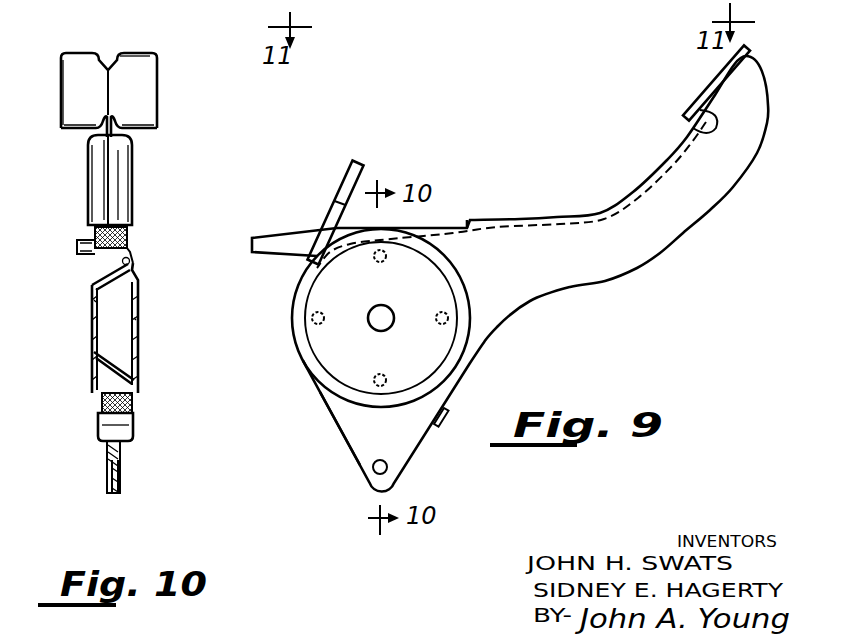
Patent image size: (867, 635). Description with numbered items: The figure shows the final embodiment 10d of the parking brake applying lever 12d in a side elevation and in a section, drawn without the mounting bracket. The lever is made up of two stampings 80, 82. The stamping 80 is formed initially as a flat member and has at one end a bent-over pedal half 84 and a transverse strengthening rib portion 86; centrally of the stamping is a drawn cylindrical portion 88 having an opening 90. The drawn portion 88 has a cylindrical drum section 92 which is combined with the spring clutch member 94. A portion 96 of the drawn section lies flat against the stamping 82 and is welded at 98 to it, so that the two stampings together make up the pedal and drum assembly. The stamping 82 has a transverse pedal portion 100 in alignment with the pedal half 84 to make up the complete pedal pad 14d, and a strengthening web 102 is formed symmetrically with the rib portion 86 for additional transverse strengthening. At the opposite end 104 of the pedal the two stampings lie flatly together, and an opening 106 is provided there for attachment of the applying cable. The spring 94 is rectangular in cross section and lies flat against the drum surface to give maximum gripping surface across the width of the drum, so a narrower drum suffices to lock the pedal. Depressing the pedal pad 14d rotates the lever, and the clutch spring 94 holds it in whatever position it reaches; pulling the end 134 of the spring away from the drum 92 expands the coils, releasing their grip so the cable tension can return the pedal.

In FIG. 9, the embodiment 10d is at (571, 213).
In FIG. 10, the applying lever 12d is at (114, 200).
In FIG. 9, the applying lever 12d is at (710, 203).
In FIG. 10, the pedal pad 14d is at (135, 54).
In FIG. 9, the pedal pad 14d is at (712, 87).
In FIG. 10, the stamping 80 is at (88, 344).
In FIG. 10, the stamping 82 is at (139, 300).
In FIG. 9, the stamping 82 is at (653, 258).
In FIG. 10, the pedal half 84 is at (75, 65).
In FIG. 10, the strengthening rib portion 86 is at (95, 160).
In FIG. 10, the drawn cylindrical portion 88 is at (90, 295).
In FIG. 10, the opening 90 is at (93, 318).
In FIG. 9, the opening 90 is at (375, 320).
In FIG. 10, the cylindrical drum section 92 is at (112, 249).
In FIG. 10, the spring clutch member 94 is at (97, 231).
In FIG. 9, the spring clutch member 94 is at (337, 197).
In FIG. 10, the portion 96 is at (130, 263).
In FIG. 10, the weld 98 is at (130, 249).
In FIG. 10, the transverse pedal portion 100 is at (147, 70).
In FIG. 10, the strengthening web 102 is at (127, 155).
In FIG. 10, the opposite end 104 is at (107, 453).
In FIG. 9, the opposite end 104 is at (348, 423).
In FIG. 10, the opening 106 is at (119, 474).
In FIG. 9, the opening 106 is at (377, 468).
In FIG. 9, the end of the spring 134 is at (268, 248).